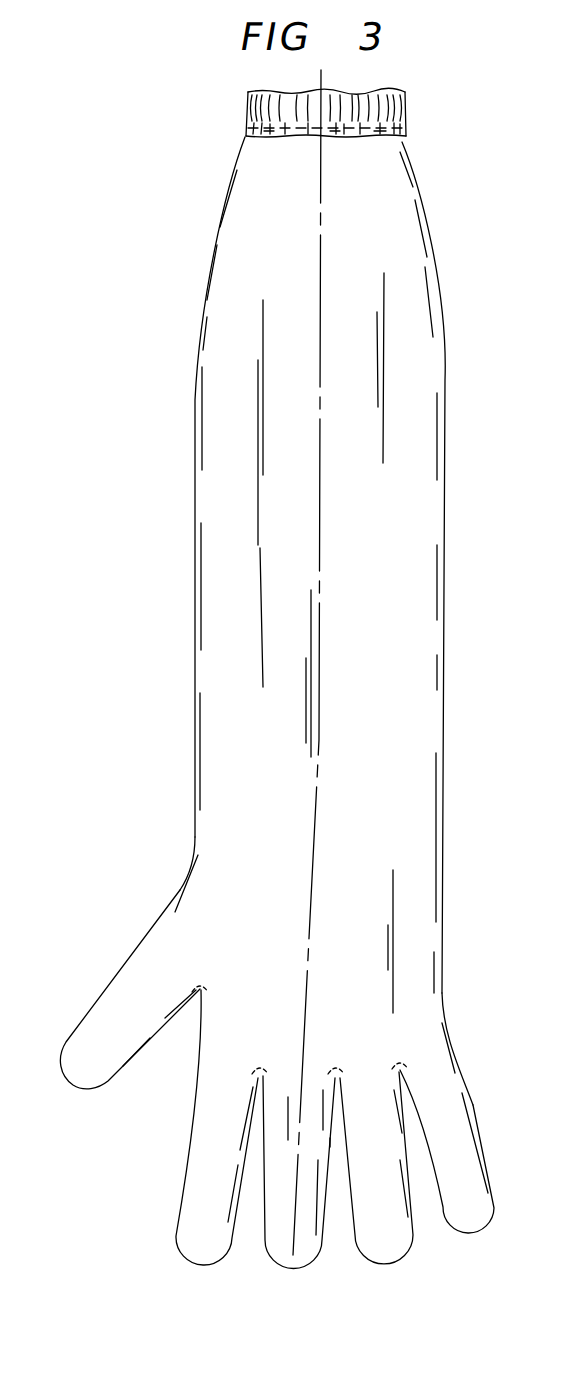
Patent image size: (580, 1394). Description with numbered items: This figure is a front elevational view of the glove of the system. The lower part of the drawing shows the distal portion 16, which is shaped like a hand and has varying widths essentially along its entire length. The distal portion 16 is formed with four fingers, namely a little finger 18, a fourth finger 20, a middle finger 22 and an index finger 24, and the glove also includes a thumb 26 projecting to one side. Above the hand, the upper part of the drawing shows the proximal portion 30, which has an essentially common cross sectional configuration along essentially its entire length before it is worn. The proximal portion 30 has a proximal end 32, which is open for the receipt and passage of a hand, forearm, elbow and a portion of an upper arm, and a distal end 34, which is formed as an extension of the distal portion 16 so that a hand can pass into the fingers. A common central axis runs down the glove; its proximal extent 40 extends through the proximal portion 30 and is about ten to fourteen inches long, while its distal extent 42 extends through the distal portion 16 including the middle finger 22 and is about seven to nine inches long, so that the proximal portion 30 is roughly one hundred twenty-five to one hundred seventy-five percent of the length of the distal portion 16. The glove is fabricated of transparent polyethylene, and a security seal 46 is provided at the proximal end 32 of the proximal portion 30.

The distal portion 16 is at (440, 937).
The little finger 18 is at (477, 1217).
The fourth finger 20 is at (390, 1252).
The middle finger 22 is at (280, 1260).
The index finger 24 is at (197, 1242).
The thumb 26 is at (93, 1050).
The proximal portion 30 is at (442, 668).
The proximal end 32 is at (362, 133).
The distal end 34 is at (192, 837).
The proximal extent 40 is at (318, 538).
The distal extent 42 is at (300, 935).
The security seal 46 is at (247, 107).